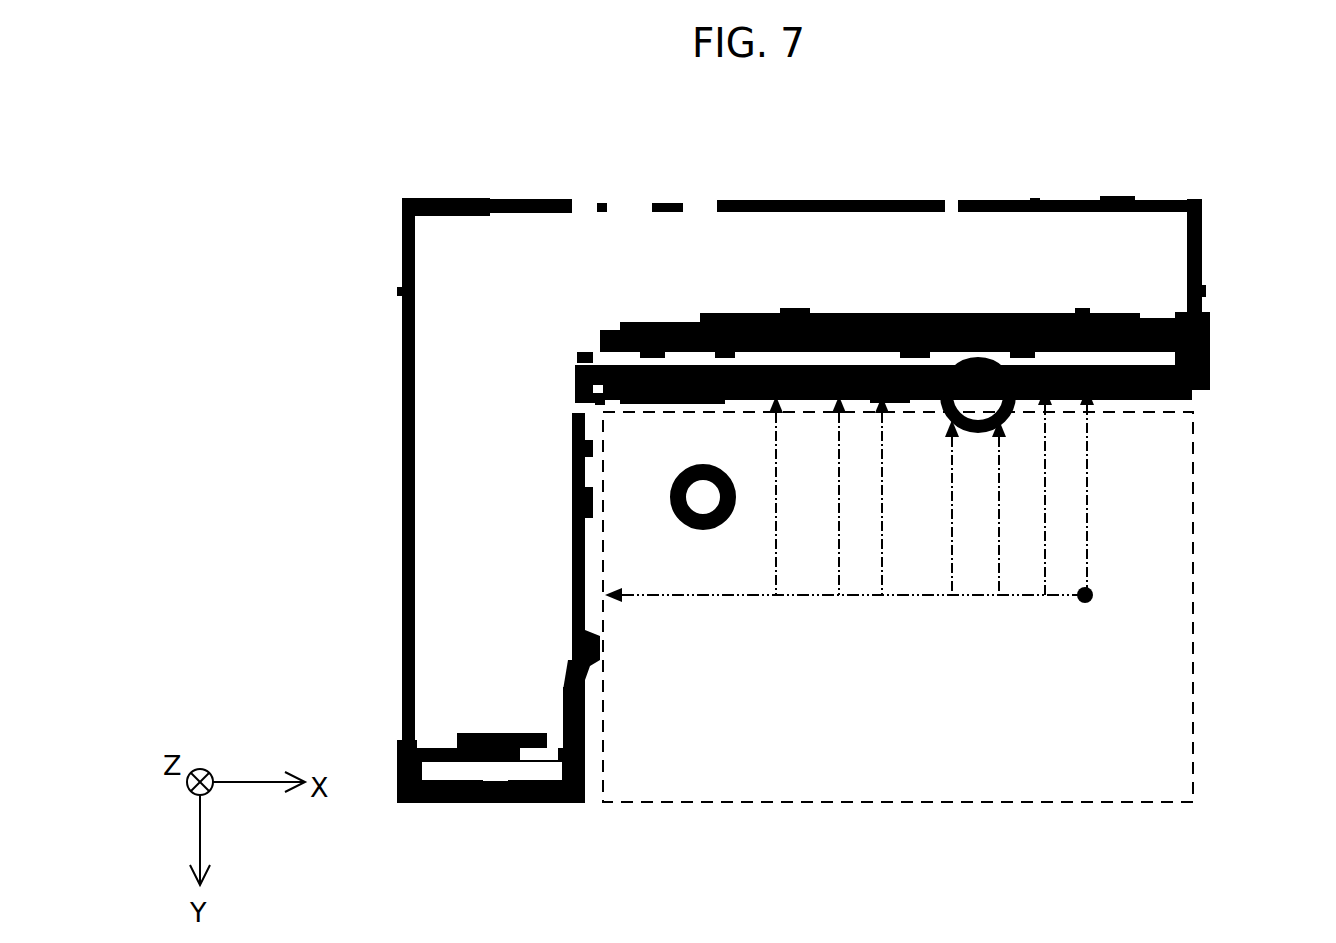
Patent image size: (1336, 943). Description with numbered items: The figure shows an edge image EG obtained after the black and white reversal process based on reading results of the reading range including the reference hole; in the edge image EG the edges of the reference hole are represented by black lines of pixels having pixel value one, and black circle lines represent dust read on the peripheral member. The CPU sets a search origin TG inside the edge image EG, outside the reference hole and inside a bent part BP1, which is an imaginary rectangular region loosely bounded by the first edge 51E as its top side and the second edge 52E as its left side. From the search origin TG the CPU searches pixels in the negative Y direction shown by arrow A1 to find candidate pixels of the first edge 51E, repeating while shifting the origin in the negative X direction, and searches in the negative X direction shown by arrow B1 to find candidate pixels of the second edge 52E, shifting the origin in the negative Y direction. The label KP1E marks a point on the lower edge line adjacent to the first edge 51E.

The key point edge KP1E is at (590, 388).
The first edge 51E is at (1197, 375).
The second edge 52E is at (583, 688).
The arrow A1 is at (1085, 495).
The arrow B1 is at (808, 598).
The search origin TG is at (1100, 625).
The bent part BP1 is at (806, 804).
The edge image EG is at (1238, 547).